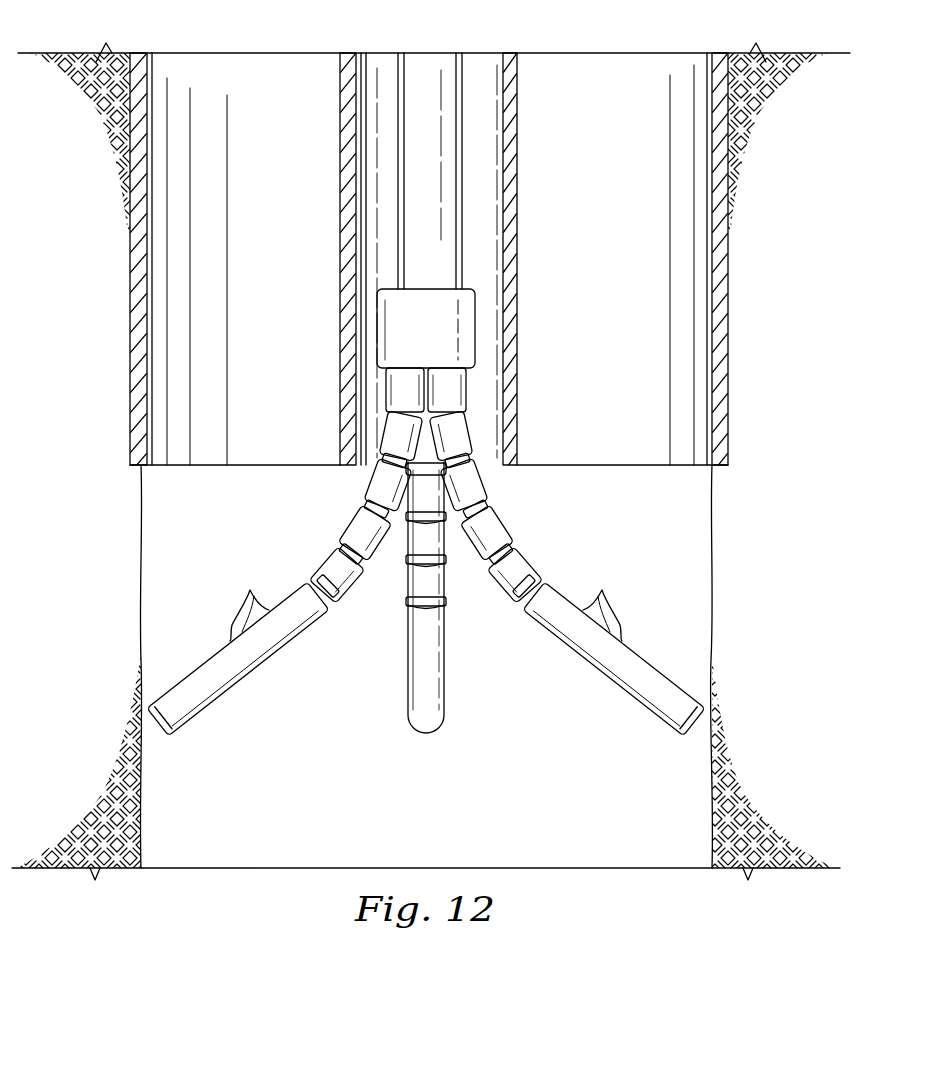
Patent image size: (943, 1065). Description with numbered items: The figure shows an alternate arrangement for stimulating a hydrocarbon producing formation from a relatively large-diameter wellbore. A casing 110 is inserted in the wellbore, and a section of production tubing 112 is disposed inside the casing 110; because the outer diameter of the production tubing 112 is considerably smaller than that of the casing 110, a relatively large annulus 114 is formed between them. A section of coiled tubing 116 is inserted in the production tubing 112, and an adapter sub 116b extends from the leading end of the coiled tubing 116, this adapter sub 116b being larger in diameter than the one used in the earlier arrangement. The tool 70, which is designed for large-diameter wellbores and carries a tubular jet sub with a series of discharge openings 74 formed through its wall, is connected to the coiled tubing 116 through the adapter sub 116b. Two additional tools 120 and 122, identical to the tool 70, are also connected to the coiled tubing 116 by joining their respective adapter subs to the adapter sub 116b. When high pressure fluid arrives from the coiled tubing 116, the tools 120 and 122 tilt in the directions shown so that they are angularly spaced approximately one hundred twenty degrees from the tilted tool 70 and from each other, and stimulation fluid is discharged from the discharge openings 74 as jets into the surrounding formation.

The casing 110 is at (152, 70).
The production tubing 112 is at (518, 178).
The annulus 114 is at (612, 255).
The coiled tubing 116 is at (462, 70).
The adapter sub 116b is at (478, 340).
The tool 120 is at (408, 667).
The tool 122 is at (322, 565).
The tool 70 is at (572, 585).
The discharge openings 74 is at (426, 603).